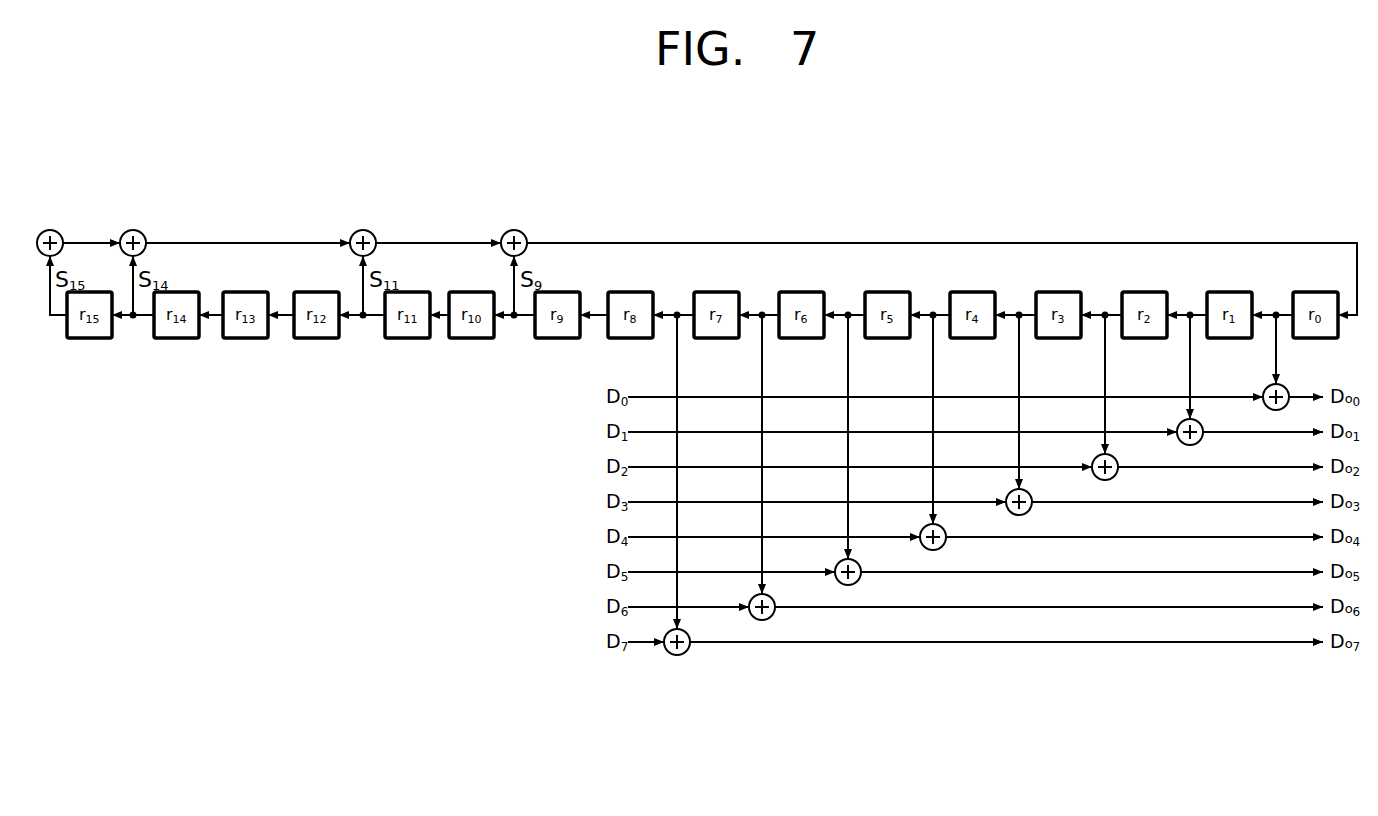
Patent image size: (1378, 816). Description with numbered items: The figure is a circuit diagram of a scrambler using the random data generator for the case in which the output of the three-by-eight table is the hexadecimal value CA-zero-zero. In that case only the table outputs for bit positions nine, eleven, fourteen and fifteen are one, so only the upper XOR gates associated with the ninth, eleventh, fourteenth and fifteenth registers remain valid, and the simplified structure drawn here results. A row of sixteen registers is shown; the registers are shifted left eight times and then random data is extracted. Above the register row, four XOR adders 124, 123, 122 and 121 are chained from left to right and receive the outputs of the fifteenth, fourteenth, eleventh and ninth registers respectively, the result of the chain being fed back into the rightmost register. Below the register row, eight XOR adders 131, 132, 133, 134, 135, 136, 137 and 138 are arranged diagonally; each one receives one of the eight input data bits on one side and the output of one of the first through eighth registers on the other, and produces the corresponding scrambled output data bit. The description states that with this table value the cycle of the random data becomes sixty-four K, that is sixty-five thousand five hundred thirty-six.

The exclusive-OR adder for syndrome bit S9 121 is at (514, 230).
The exclusive-OR adder for syndrome bit S11 122 is at (363, 230).
The exclusive-OR adder for syndrome bit S14 123 is at (133, 230).
The exclusive-OR adder for syndrome bit S15 124 is at (50, 230).
The exclusive-OR adder for output data bit Do0 131 is at (1287, 390).
The exclusive-OR adder for output data bit Do1 132 is at (1201, 425).
The exclusive-OR adder for output data bit Do2 133 is at (1116, 460).
The exclusive-OR adder for output data bit Do3 134 is at (1030, 495).
The exclusive-OR adder for output data bit Do4 135 is at (944, 530).
The exclusive-OR adder for output data bit Do5 136 is at (859, 565).
The exclusive-OR adder for output data bit Do6 137 is at (773, 600).
The exclusive-OR adder for output data bit Do7 138 is at (688, 635).